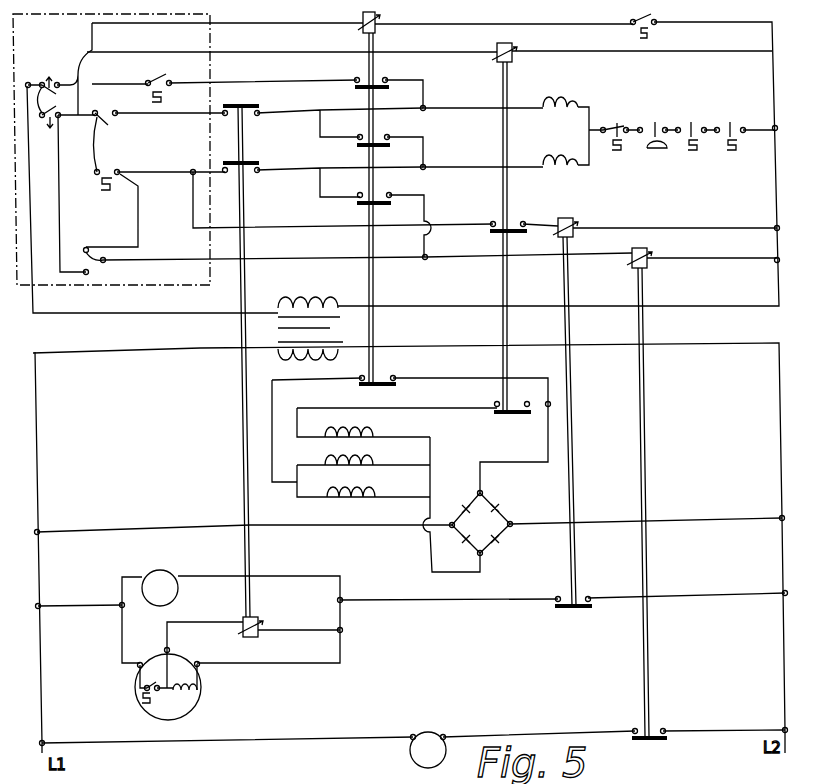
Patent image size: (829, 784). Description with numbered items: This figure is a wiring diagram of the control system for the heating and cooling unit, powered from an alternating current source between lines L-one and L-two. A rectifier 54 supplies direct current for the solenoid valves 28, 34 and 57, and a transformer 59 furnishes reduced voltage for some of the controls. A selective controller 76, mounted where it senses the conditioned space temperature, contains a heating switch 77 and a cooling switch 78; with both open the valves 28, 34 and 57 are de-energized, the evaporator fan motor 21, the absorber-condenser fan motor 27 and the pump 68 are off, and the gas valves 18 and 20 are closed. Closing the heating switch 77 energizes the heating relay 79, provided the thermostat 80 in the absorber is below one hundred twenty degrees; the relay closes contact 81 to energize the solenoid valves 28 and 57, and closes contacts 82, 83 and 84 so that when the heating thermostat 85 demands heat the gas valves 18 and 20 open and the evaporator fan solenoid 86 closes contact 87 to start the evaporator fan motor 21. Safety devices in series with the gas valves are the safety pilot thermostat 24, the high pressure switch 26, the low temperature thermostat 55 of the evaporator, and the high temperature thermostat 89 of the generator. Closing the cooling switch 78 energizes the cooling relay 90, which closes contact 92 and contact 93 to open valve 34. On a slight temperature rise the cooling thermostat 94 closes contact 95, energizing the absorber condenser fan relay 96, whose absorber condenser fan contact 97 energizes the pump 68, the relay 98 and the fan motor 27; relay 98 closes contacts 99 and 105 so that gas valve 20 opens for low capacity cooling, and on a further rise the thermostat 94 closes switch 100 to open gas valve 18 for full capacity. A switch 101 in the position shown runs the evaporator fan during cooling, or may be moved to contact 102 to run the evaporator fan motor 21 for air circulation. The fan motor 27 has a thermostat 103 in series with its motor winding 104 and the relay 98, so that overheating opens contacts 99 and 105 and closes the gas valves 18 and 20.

The gas valve 18 is at (548, 108).
The gas valve 20 is at (556, 166).
The evaporator fan motor 21 is at (409, 752).
The safety pilot thermostat 24 is at (624, 136).
The high pressure switch 26 is at (665, 136).
The absorber-condenser fan motor 27 is at (150, 712).
The solenoid valve 28 is at (373, 460).
The solenoid valve 34 is at (373, 430).
The rectifier 54 is at (496, 505).
The low temperature thermostat 55 is at (702, 136).
The solenoid valve 57 is at (377, 490).
The transformer 59 is at (332, 328).
The pump 68 is at (170, 573).
The selective controller 76 is at (58, 287).
The heating switch 77 is at (48, 80).
The cooling switch 78 is at (49, 130).
The heating relay 79 is at (378, 23).
The thermostat 80 is at (655, 28).
The contact 81 is at (395, 386).
The contact 82 is at (386, 88).
The contact 83 is at (382, 146).
The contact 84 is at (385, 205).
The heating thermostat 85 is at (168, 88).
The evaporator fan solenoid 86 is at (650, 256).
The contact 87 is at (662, 738).
The high temperature thermostat 89 is at (744, 136).
The cooling relay 90 is at (515, 50).
The contact 92 is at (492, 230).
The contact 93 is at (504, 415).
The cooling thermostat 94 is at (100, 180).
The contact 95 is at (107, 170).
The absorber condenser fan relay 96 is at (573, 219).
The absorber condenser fan contact 97 is at (568, 607).
The relay 98 is at (256, 638).
The contact 99 is at (250, 166).
The switch 100 is at (106, 123).
The switch 101 is at (83, 258).
The contact 102 is at (89, 274).
The thermostat 103 is at (145, 691).
The motor winding 104 is at (197, 692).
The contact 105 is at (250, 109).